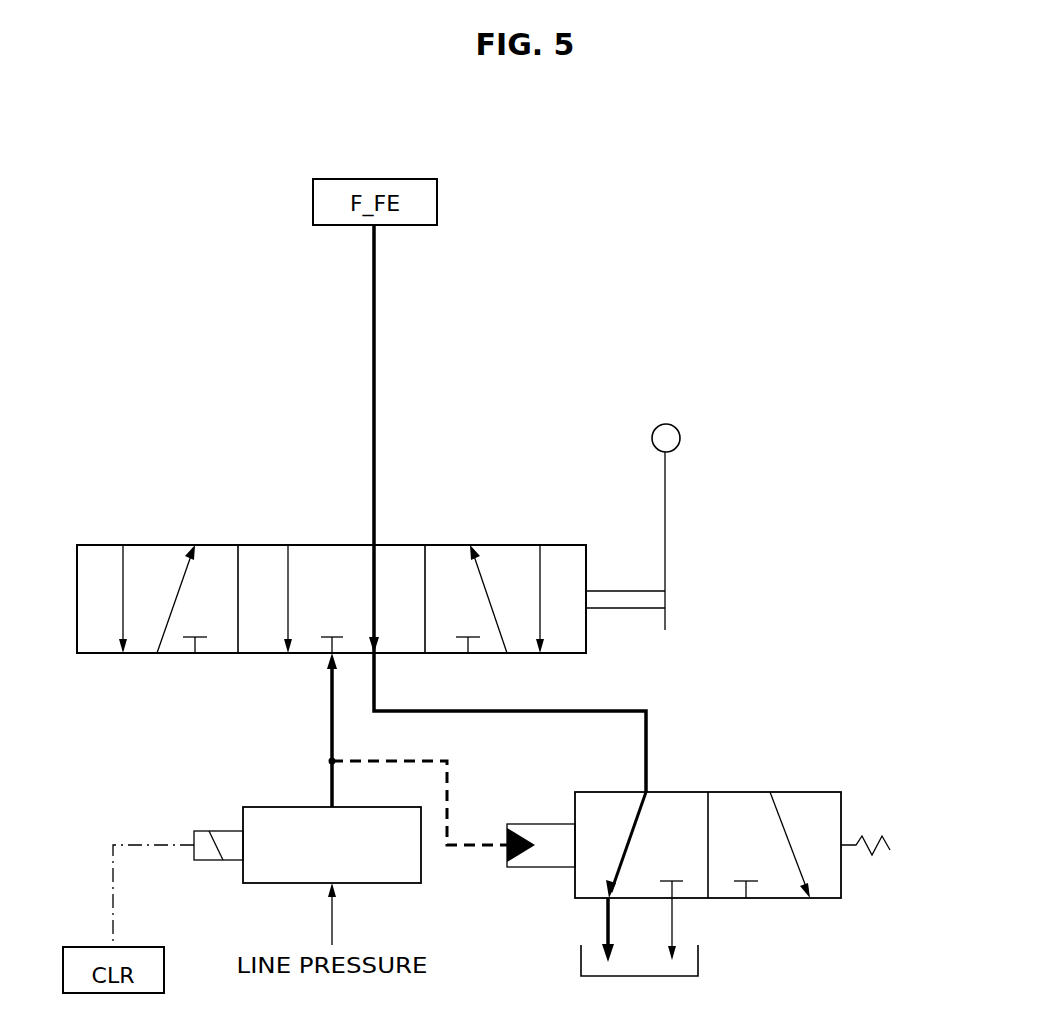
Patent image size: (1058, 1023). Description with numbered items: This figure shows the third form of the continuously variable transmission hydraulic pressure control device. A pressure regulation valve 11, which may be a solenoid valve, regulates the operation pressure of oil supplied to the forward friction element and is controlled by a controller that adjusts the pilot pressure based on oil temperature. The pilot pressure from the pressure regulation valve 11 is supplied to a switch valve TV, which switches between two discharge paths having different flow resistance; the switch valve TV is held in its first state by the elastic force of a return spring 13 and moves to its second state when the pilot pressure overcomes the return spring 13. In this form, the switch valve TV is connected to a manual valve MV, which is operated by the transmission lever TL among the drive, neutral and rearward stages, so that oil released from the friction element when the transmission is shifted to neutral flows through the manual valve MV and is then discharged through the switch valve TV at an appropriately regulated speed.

The pressure regulation valve 11 is at (262, 807).
The return spring 13 is at (876, 857).
The manual valve MV is at (121, 528).
The switch valve TV is at (830, 787).
The transmission lever TL is at (678, 428).